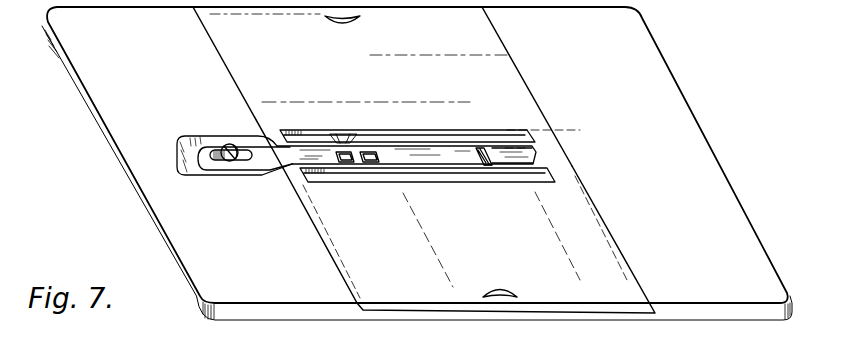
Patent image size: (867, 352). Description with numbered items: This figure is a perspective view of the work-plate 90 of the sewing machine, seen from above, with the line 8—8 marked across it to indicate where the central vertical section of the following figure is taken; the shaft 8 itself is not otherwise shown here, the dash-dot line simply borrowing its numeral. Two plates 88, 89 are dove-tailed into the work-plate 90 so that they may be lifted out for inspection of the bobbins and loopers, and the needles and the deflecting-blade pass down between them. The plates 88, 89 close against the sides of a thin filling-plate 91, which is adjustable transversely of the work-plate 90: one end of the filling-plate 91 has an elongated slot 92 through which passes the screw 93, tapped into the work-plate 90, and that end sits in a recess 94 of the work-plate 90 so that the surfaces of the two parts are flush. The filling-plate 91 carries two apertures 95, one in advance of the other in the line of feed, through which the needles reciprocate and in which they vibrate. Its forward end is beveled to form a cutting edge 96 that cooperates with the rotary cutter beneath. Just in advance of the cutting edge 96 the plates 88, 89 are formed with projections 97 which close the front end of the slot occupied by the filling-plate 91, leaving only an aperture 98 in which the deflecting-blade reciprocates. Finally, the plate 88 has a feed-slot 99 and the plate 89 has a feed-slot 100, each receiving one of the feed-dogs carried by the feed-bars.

The shaft 8 is at (162, 155).
The plate 88 is at (382, 87).
The plate 89 is at (469, 221).
The work-plate 90 is at (417, 163).
The filling-plate 91 is at (290, 161).
The elongated slot 92 is at (241, 160).
The screw 93 is at (226, 141).
The recess 94 is at (185, 164).
The apertures 95 is at (345, 163).
The cutting edge 96 is at (484, 166).
The projections 97 is at (532, 165).
The aperture 98 is at (487, 150).
The feed-slot 99 is at (397, 142).
The feed-slot 100 is at (405, 180).